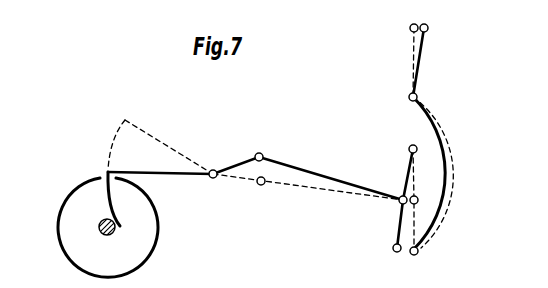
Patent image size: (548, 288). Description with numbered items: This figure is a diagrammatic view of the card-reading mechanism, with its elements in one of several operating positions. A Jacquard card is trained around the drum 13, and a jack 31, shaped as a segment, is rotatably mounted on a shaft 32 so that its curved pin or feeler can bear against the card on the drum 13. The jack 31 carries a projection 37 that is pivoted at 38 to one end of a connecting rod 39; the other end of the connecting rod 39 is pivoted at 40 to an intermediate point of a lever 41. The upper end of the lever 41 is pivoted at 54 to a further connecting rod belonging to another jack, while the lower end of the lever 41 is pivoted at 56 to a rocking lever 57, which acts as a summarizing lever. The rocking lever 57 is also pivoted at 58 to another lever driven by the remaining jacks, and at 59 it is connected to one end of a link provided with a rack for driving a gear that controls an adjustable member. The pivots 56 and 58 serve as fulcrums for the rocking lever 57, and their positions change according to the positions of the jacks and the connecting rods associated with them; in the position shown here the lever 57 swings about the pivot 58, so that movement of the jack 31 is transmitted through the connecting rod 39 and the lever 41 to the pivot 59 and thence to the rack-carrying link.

The drum 13 is at (78, 222).
The jack 31 is at (170, 176).
The shaft 32 is at (213, 178).
The projection 37 is at (236, 164).
The pivot 38 is at (261, 153).
The connecting rod 39 is at (303, 167).
The pivot 40 is at (400, 202).
The lever 41 is at (408, 170).
The pivot 54 is at (409, 149).
The pivot 56 is at (393, 248).
The rocking lever 57 is at (446, 182).
The pivot 58 is at (409, 97).
The pivot 59 is at (428, 28).